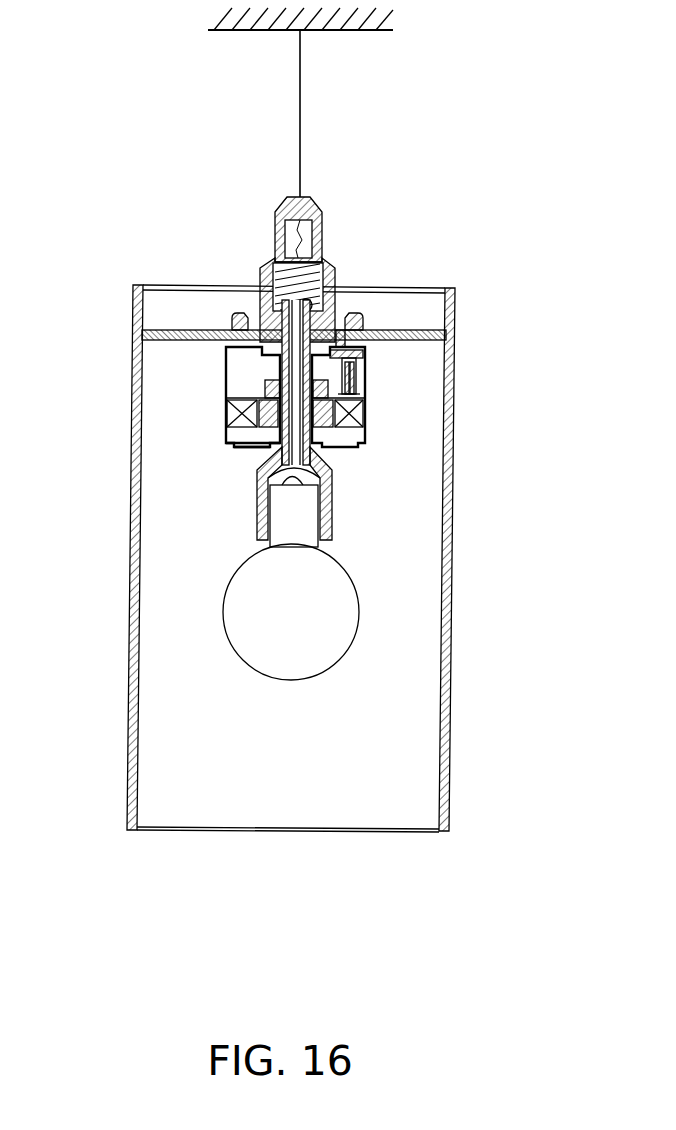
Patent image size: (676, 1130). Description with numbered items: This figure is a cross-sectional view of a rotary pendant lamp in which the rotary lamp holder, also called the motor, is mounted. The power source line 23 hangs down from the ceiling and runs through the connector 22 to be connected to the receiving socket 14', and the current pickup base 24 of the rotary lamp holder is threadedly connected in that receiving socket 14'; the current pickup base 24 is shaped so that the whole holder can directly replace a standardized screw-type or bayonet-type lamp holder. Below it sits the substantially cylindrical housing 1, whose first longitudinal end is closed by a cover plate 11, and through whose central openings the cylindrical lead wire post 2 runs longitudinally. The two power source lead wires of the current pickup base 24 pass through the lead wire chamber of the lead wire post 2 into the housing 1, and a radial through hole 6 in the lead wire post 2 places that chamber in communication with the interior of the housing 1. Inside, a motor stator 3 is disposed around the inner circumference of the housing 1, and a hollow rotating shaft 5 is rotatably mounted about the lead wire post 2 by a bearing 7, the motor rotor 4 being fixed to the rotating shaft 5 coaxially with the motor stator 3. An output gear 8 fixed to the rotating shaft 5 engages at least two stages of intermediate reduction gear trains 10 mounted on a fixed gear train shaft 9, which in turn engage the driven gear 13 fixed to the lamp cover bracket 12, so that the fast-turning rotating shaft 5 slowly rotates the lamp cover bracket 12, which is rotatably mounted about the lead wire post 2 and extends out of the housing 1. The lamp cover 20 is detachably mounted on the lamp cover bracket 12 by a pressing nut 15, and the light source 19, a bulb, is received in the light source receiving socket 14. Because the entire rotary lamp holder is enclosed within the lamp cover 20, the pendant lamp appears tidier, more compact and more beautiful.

The housing 1 is at (257, 467).
The lead wire post 2 is at (250, 443).
The motor stator 3 is at (227, 430).
The motor rotor 4 is at (250, 413).
The rotating shaft 5 is at (226, 392).
The radial through hole 6 is at (335, 482).
The bearing 7 is at (263, 380).
The output gear 8 is at (358, 427).
The gear train shaft 9 is at (347, 377).
The intermediate reduction gear trains 10 is at (407, 337).
The cover plate 11 is at (367, 350).
The lamp cover bracket 12 is at (350, 317).
The driven gear 13 is at (337, 337).
The light source receiving socket 14 is at (356, 701).
The receiving socket 14' is at (242, 183).
The pressing nut 15 is at (233, 315).
The light source 19 is at (292, 612).
The lamp cover 20 is at (136, 792).
The connector 22 is at (306, 193).
The power source line 23 is at (298, 193).
The current pickup base 24 is at (260, 287).